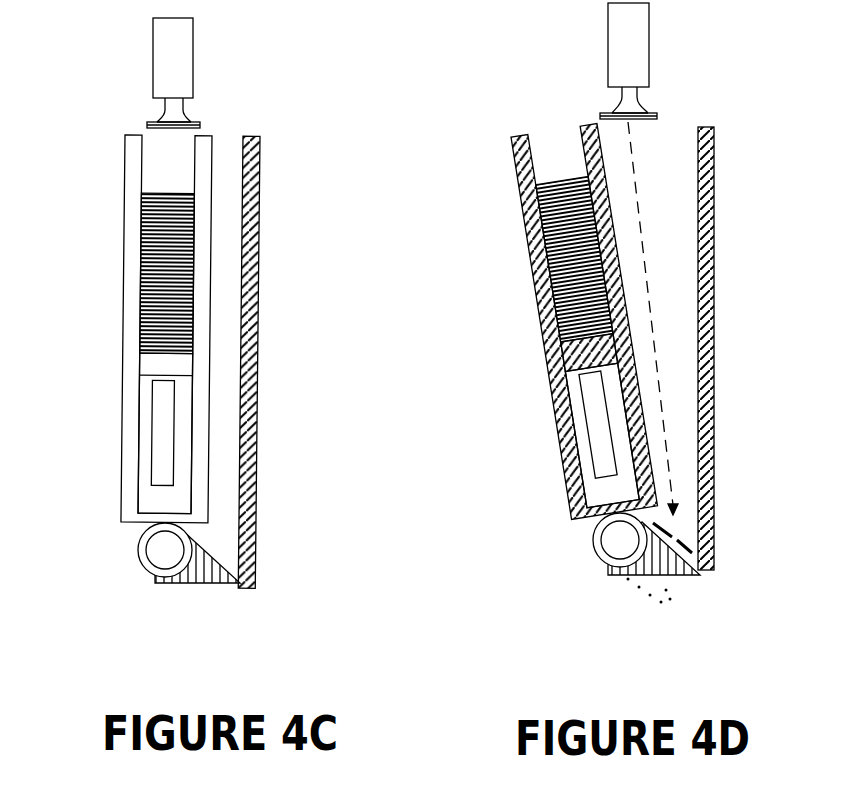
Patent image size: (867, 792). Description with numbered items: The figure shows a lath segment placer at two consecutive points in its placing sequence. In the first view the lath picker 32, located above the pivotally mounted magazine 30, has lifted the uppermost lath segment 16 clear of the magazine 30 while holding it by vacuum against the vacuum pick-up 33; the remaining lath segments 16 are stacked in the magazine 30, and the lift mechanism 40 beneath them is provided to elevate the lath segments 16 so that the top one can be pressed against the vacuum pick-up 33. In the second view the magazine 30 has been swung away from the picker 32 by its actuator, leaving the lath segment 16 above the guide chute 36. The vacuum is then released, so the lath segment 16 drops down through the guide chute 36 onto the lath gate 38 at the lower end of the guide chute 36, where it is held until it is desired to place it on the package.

In FIG. 4C, the lath segment 16 is at (147, 125).
In FIG. 4D, the lath segment 16 is at (545, 248).
In FIG. 4C, the magazine 30 is at (132, 200).
In FIG. 4D, the magazine 30 is at (520, 183).
In FIG. 4C, the lath picker 32 is at (152, 53).
In FIG. 4D, the lath picker 32 is at (607, 43).
In FIG. 4C, the vacuum pick-up 33 is at (160, 118).
In FIG. 4D, the vacuum pick-up 33 is at (613, 110).
In FIG. 4C, the guide chute 36 is at (237, 125).
In FIG. 4D, the guide chute 36 is at (668, 134).
In FIG. 4C, the lath gate 38 is at (230, 587).
In FIG. 4D, the lath gate 38 is at (687, 577).
In FIG. 4C, the lift mechanism 40 is at (170, 363).